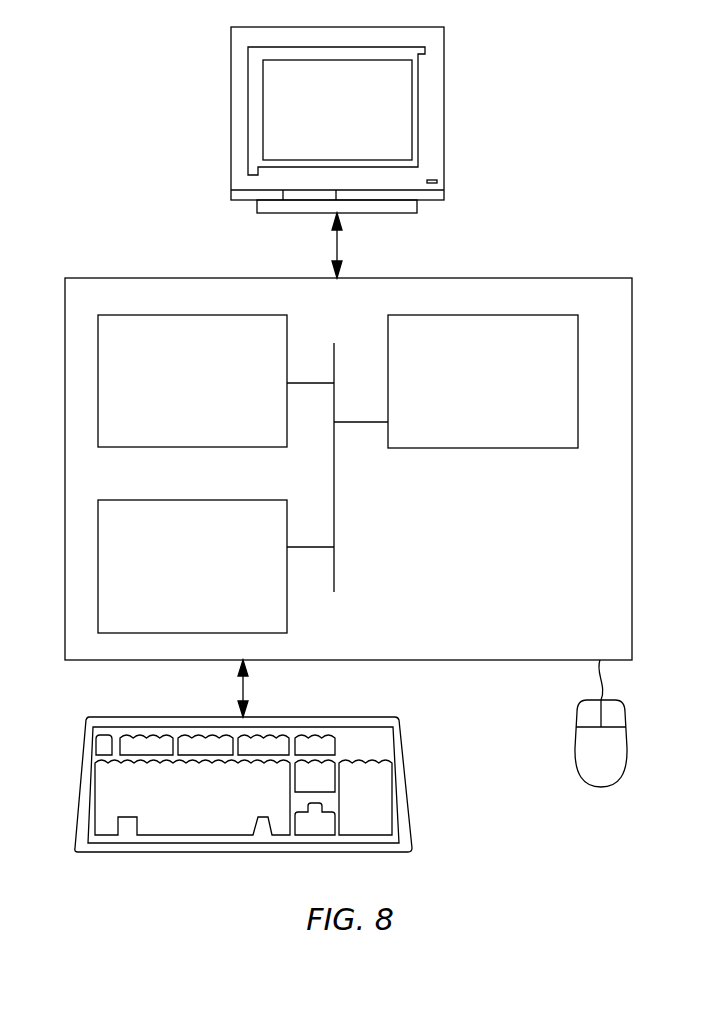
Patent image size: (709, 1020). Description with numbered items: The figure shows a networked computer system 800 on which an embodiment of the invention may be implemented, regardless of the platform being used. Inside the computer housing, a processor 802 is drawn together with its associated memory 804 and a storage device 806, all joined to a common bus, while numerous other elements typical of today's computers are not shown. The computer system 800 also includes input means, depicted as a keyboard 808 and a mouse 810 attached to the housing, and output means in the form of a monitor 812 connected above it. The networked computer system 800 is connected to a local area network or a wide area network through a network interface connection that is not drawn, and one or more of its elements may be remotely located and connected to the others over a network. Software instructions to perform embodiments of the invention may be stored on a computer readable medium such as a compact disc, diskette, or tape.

The networked computer system 800 is at (371, 439).
The processor 802 is at (464, 391).
The memory 804 is at (175, 392).
The storage device 806 is at (172, 576).
The keyboard 808 is at (169, 815).
The mouse 810 is at (583, 762).
The monitor 812 is at (319, 122).